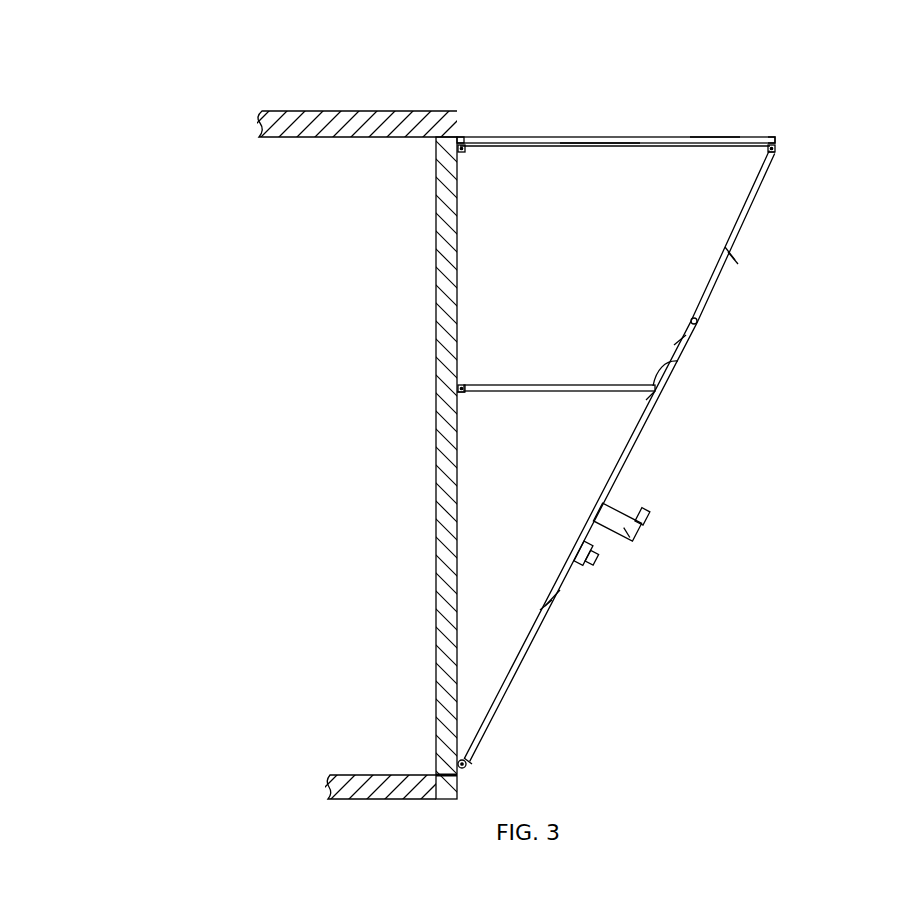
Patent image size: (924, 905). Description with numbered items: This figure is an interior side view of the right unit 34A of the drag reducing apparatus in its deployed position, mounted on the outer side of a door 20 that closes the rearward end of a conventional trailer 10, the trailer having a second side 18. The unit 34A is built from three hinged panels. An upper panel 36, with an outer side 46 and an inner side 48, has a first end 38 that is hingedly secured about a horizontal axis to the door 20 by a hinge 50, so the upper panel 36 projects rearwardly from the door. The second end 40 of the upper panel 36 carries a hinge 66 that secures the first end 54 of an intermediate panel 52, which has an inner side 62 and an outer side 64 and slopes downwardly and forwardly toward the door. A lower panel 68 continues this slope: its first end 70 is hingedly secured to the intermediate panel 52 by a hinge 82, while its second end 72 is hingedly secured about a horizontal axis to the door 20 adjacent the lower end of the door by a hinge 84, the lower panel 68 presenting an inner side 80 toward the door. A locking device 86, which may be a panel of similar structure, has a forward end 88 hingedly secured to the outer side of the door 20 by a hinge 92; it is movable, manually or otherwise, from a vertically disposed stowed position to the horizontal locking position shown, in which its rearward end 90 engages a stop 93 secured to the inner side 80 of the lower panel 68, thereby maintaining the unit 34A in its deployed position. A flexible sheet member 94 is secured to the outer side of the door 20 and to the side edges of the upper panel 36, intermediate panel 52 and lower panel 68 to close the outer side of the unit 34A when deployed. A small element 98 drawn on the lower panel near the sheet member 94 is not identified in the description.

The trailer 10 is at (320, 98).
The second side 18 is at (558, 593).
The door 20 is at (434, 273).
The right unit 34A is at (630, 120).
The upper panel 36 is at (578, 136).
The first end 38 is at (458, 136).
The second end 40 is at (778, 138).
The outer side 46 is at (717, 127).
The inner side 48 is at (600, 172).
The hinge 50 is at (464, 155).
The intermediate panel 52 is at (762, 247).
The first end 54 is at (782, 150).
The inner side 62 is at (712, 250).
The outer side 64 is at (738, 268).
The hinge 66 is at (768, 158).
The lower panel 68 is at (633, 480).
The first end 70 is at (698, 325).
The second end 72 is at (478, 747).
The inner side 80 is at (550, 600).
The hinge 82 is at (677, 316).
The hinge 84 is at (470, 768).
The locking device 86 is at (581, 372).
The forward end 88 is at (472, 380).
The rearward end 90 is at (677, 356).
The hinge 92 is at (464, 394).
The stop 93 is at (645, 401).
The flexible sheet member 94 is at (648, 516).
The locking bolt 98 is at (600, 556).